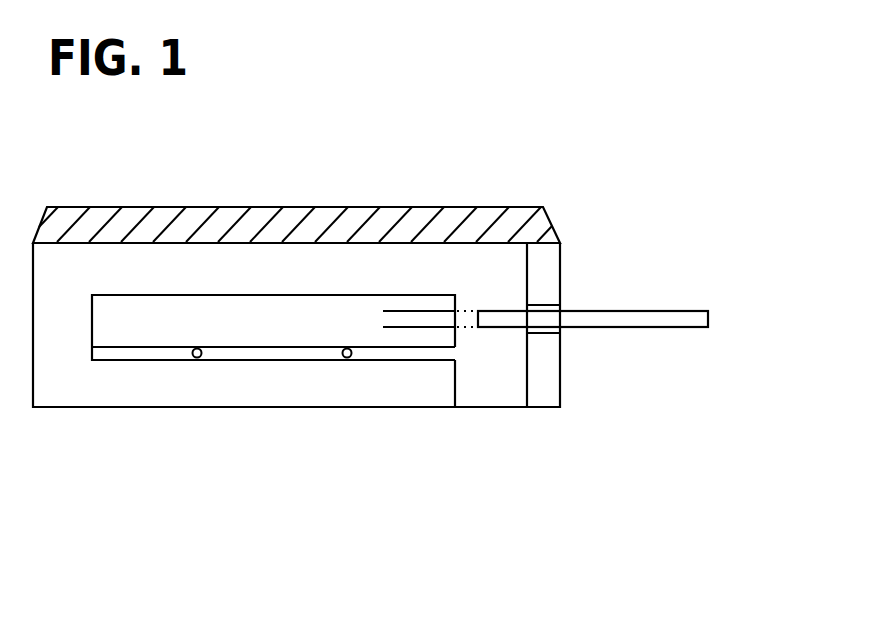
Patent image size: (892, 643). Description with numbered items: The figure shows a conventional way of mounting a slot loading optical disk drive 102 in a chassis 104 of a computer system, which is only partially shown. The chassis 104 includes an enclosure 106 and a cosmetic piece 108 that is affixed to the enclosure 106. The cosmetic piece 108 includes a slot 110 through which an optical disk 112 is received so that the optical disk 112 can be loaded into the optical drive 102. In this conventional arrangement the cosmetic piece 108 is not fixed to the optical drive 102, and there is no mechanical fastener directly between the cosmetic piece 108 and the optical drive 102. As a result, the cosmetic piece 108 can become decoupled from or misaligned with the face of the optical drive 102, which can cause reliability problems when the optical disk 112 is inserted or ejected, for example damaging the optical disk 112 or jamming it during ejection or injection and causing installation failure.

The slot loading optical disk drive 102 is at (274, 332).
The chassis 104 is at (488, 408).
The enclosure 106 is at (507, 198).
The cosmetic piece 108 is at (560, 258).
The slot 110 is at (553, 331).
The optical disk 112 is at (693, 310).